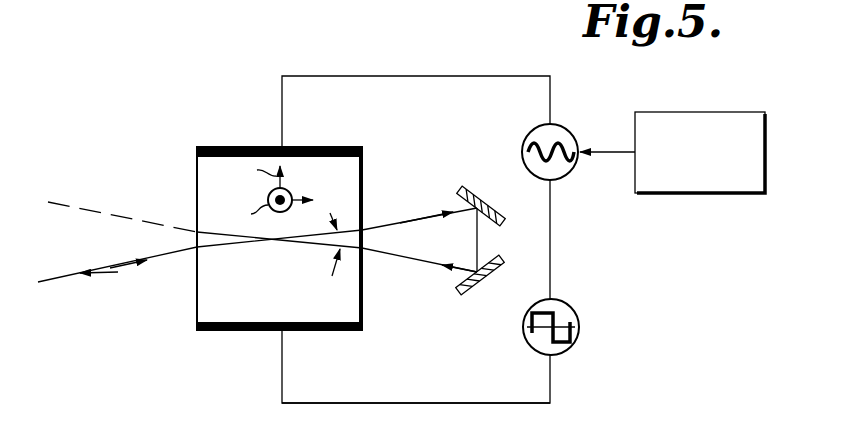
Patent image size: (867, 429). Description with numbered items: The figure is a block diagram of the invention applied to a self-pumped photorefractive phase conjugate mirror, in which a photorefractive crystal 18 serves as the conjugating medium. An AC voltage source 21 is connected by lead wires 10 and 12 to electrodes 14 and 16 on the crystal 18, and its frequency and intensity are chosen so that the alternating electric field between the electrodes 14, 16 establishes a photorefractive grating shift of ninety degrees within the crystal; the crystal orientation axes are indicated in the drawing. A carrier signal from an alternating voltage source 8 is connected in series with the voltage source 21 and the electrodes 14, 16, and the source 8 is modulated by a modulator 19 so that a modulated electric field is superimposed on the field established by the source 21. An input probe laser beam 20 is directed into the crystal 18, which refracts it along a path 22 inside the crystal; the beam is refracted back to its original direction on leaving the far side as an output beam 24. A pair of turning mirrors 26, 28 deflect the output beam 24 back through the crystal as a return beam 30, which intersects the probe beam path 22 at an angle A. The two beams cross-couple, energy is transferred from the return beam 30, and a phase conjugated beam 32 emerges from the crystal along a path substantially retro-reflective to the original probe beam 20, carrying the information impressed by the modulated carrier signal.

The alternating voltage source 8 is at (566, 126).
The lead wire 10 is at (418, 76).
The lead wire 12 is at (380, 403).
The electrode 14 is at (227, 147).
The electrode 16 is at (244, 247).
The crystal 18 is at (196, 312).
The modulator 19 is at (692, 112).
The input probe laser beam 20 is at (150, 264).
The AC voltage source 21 is at (579, 325).
The probe beam path 22 is at (218, 250).
The output beam 24 is at (416, 213).
The turning mirror 26 is at (466, 189).
The turning mirror 28 is at (474, 294).
The return beam 30 is at (412, 262).
The phase conjugated beam 32 is at (79, 275).